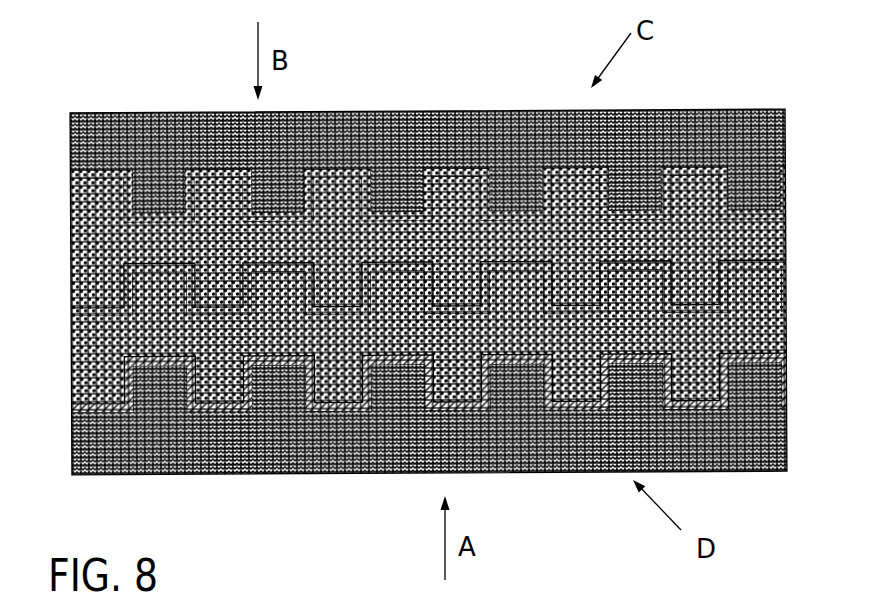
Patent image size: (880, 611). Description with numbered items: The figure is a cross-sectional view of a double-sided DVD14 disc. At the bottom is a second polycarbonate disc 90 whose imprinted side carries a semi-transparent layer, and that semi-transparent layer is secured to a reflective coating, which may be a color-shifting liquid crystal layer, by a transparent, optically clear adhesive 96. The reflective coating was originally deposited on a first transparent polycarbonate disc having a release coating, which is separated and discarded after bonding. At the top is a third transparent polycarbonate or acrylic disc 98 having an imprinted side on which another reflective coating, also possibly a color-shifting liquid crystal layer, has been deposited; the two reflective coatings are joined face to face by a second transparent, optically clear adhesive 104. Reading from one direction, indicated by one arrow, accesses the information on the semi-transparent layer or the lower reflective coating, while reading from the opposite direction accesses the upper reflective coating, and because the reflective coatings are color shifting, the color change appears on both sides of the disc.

The second polycarbonate disc 90 is at (404, 450).
The optically clear adhesive 96 is at (399, 338).
The third transparent polycarbonate or acrylic disc 98 is at (213, 150).
The optically clear adhesive 104 is at (241, 249).